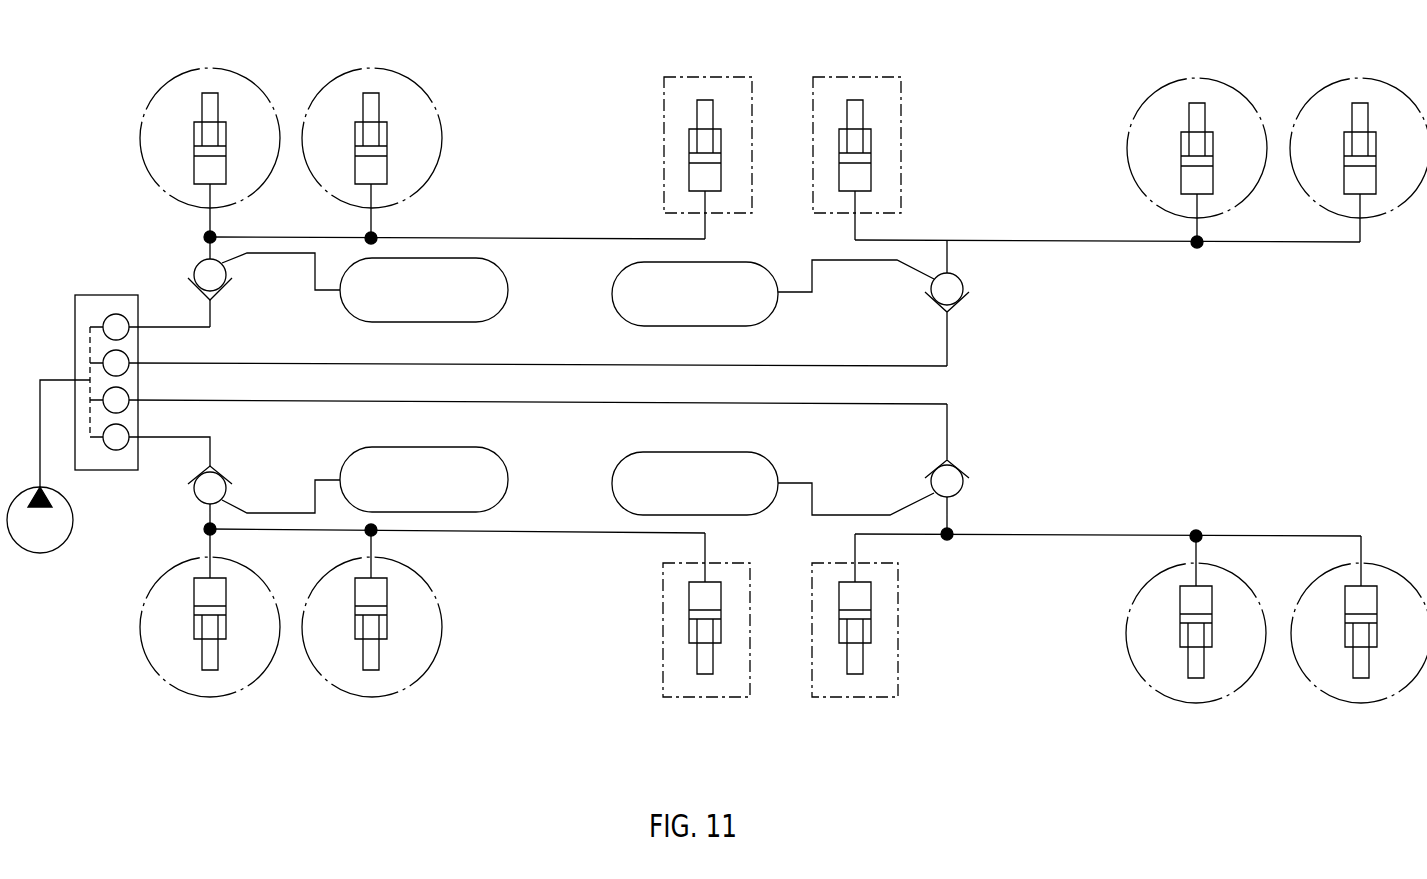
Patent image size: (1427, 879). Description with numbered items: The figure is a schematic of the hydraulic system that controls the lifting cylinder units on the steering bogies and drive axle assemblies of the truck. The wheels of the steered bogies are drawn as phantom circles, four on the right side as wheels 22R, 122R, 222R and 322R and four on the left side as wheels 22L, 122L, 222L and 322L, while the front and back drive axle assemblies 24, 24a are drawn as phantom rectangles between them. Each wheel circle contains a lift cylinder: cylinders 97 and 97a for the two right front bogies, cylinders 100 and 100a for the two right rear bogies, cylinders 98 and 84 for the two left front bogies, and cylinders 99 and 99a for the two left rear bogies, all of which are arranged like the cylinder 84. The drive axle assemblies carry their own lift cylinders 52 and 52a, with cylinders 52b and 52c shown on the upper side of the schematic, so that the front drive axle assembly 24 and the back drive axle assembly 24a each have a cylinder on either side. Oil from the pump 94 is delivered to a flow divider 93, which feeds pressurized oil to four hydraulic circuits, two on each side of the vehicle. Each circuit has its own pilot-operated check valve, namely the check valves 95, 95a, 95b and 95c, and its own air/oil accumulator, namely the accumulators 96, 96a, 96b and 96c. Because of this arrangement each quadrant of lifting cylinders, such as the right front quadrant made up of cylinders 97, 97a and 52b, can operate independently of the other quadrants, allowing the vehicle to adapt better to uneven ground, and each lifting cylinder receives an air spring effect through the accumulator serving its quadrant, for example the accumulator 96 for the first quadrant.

The right front wheel 22R is at (188, 78).
The right second wheel 122R is at (355, 78).
The right third wheel 222R is at (1163, 87).
The right rear wheel 322R is at (1333, 87).
The left front wheel 22L is at (186, 692).
The left second wheel 122L is at (348, 692).
The left third wheel 222L is at (1178, 700).
The left rear wheel 322L is at (1343, 700).
The lift cylinder 97 is at (222, 133).
The lift cylinder 97a is at (380, 133).
The lift cylinder 52b is at (714, 140).
The hydraulic cylinder 52c is at (864, 140).
The lift cylinder 100 is at (1196, 121).
The lift cylinder 100a is at (1368, 186).
The lift cylinder 98 is at (216, 645).
The cylinder 84 is at (378, 645).
The lift cylinder assembly 52 is at (707, 652).
The lift cylinder assembly 52a is at (868, 652).
The lift cylinder 99 is at (1196, 655).
The lift cylinder 99a is at (1360, 668).
The front drive axle assembly 24 is at (690, 697).
The back drive axle assembly 24a is at (838, 697).
The flow divider 93 is at (93, 301).
The pump 94 is at (72, 522).
The pilot-operated check valve 95 is at (222, 271).
The pilot-operated check valve 95a is at (222, 494).
The pilot-operated check valve 95b is at (1022, 293).
The pilot-operated check valve 95c is at (950, 488).
The air/oil accumulator 96 is at (415, 301).
The air/oil accumulator 96a is at (702, 305).
The air/oil accumulator 96b is at (438, 486).
The air/oil accumulator 96c is at (708, 493).